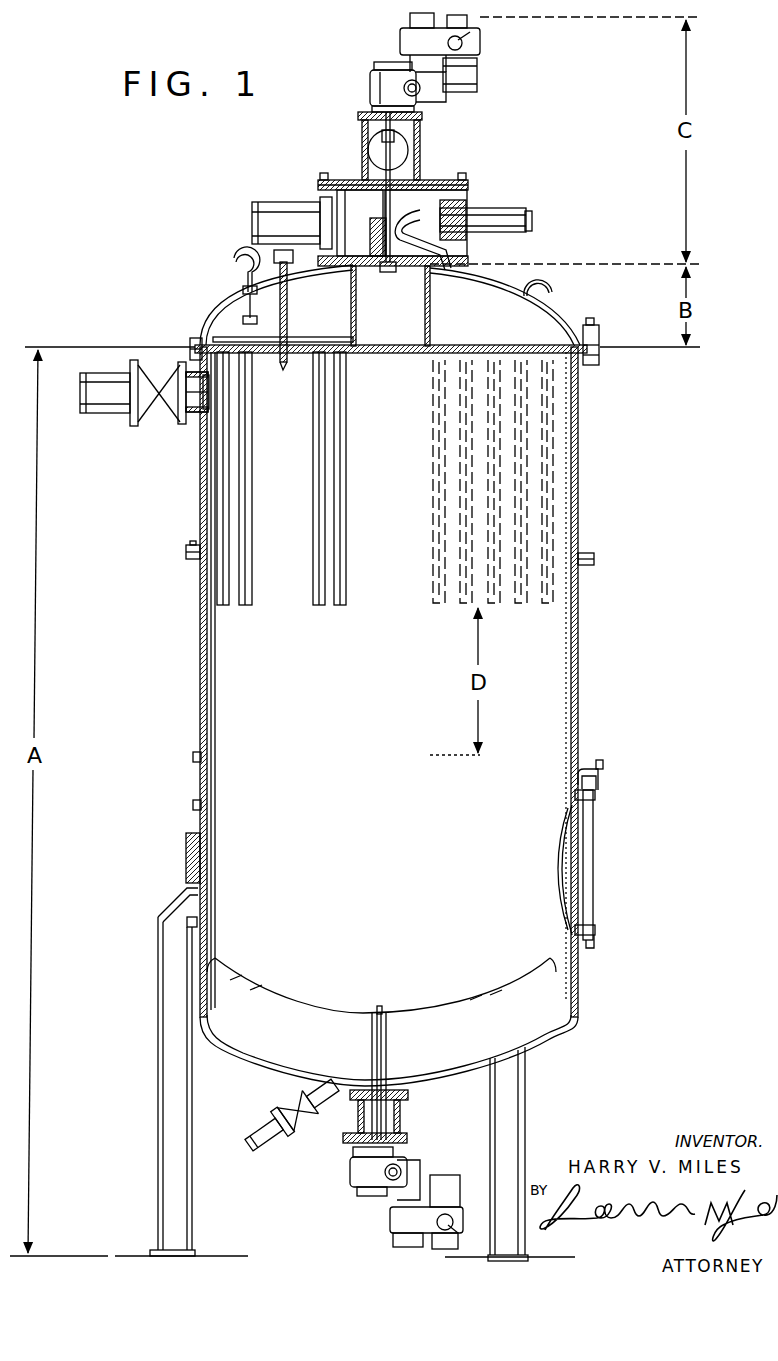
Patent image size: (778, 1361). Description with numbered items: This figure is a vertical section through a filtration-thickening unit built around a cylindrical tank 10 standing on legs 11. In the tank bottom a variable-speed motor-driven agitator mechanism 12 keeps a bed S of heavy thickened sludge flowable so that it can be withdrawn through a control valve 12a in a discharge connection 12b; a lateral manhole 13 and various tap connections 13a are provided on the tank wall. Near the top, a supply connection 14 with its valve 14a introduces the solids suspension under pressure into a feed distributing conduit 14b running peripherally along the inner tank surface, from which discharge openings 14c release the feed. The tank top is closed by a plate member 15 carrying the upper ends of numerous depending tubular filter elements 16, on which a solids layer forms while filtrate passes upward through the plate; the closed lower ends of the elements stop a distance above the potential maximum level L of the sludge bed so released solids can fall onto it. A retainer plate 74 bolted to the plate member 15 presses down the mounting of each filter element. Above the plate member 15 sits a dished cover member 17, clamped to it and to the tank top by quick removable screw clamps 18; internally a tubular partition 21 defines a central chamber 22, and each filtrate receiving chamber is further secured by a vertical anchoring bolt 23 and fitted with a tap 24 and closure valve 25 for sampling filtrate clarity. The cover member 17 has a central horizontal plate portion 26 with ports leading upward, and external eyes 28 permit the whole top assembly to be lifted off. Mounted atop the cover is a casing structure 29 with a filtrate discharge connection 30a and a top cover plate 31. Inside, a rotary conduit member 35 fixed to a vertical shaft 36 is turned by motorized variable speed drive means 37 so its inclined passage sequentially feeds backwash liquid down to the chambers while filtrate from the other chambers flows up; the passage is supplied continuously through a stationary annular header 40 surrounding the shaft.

The cylindrical tank 10 is at (175, 664).
The legs 11 is at (158, 984).
The variable-speed motor-driven agitator mechanism 12 is at (333, 1135).
The control valve 12a is at (290, 1112).
The discharge connection 12b is at (252, 1128).
The lateral manhole 13 is at (592, 868).
The tap connections 13a is at (637, 547).
The supply connection 14 is at (110, 400).
The valve 14a is at (165, 410).
The feed distributing conduit 14b is at (217, 400).
The discharge openings 14c is at (205, 393).
The plate member 15 is at (192, 345).
The tubular filter elements 16 is at (345, 530).
The dished cover member 17 is at (568, 325).
The screw clamps 18 is at (599, 335).
The tubular partition 21 is at (426, 305).
The central chamber 22 is at (397, 331).
The anchoring bolt 23 is at (288, 322).
The tap 24 is at (236, 258).
The closure valve 25 is at (243, 290).
The central horizontal plate portion 26 is at (448, 264).
The external eyes 28 is at (549, 310).
The casing structure 29 is at (470, 181).
The filtrate discharge connection 30a is at (281, 210).
The top cover plate 31 is at (432, 183).
The rotary conduit member 35 is at (367, 248).
The vertical shaft 36 is at (386, 162).
The motorized variable speed drive means 37 is at (372, 82).
The stationary annular header 40 is at (382, 213).
The retainer plate 74 is at (236, 337).
The bed of heavy thickened sludge S is at (396, 827).
The potential maximum level L is at (355, 750).